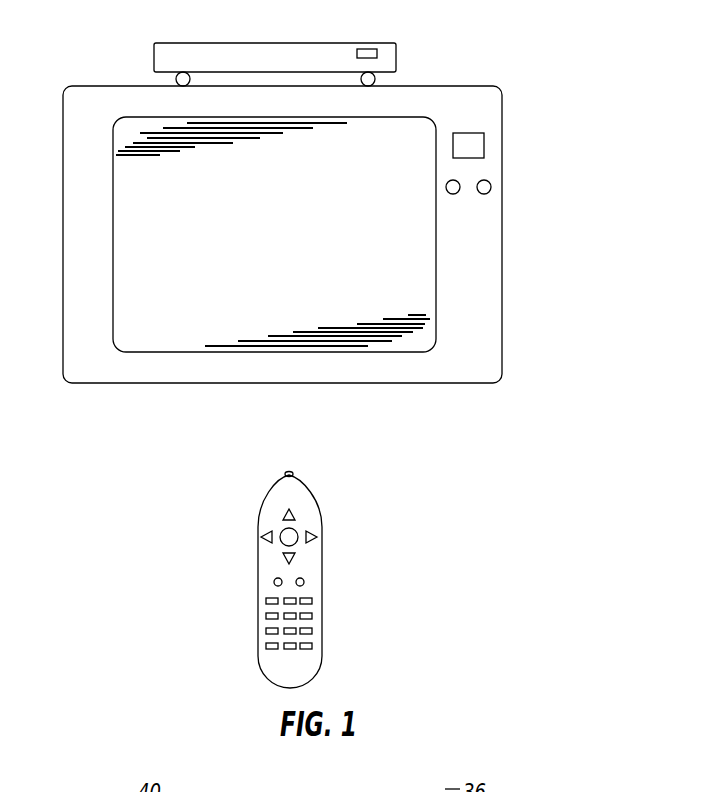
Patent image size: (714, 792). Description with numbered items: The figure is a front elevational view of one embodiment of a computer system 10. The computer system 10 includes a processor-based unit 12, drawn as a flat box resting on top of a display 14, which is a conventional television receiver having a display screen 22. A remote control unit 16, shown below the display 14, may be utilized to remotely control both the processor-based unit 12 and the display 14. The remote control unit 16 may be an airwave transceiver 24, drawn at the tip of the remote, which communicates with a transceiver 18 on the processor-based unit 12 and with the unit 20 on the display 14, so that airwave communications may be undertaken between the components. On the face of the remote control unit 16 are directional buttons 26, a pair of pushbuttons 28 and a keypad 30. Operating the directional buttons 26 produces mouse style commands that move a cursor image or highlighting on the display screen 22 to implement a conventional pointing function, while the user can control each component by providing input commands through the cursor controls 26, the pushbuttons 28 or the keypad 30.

The computer system 10 is at (530, 58).
The processor-based unit 12 is at (275, 48).
The display 14 is at (310, 234).
The remote control unit 16 is at (323, 581).
The transceiver 18 is at (390, 38).
The unit 20 is at (501, 151).
The display screen 22 is at (335, 234).
The airwave transceiver 24 is at (316, 453).
The directional buttons 26 is at (316, 518).
The pushbuttons 28 is at (331, 604).
The keypad 30 is at (327, 631).